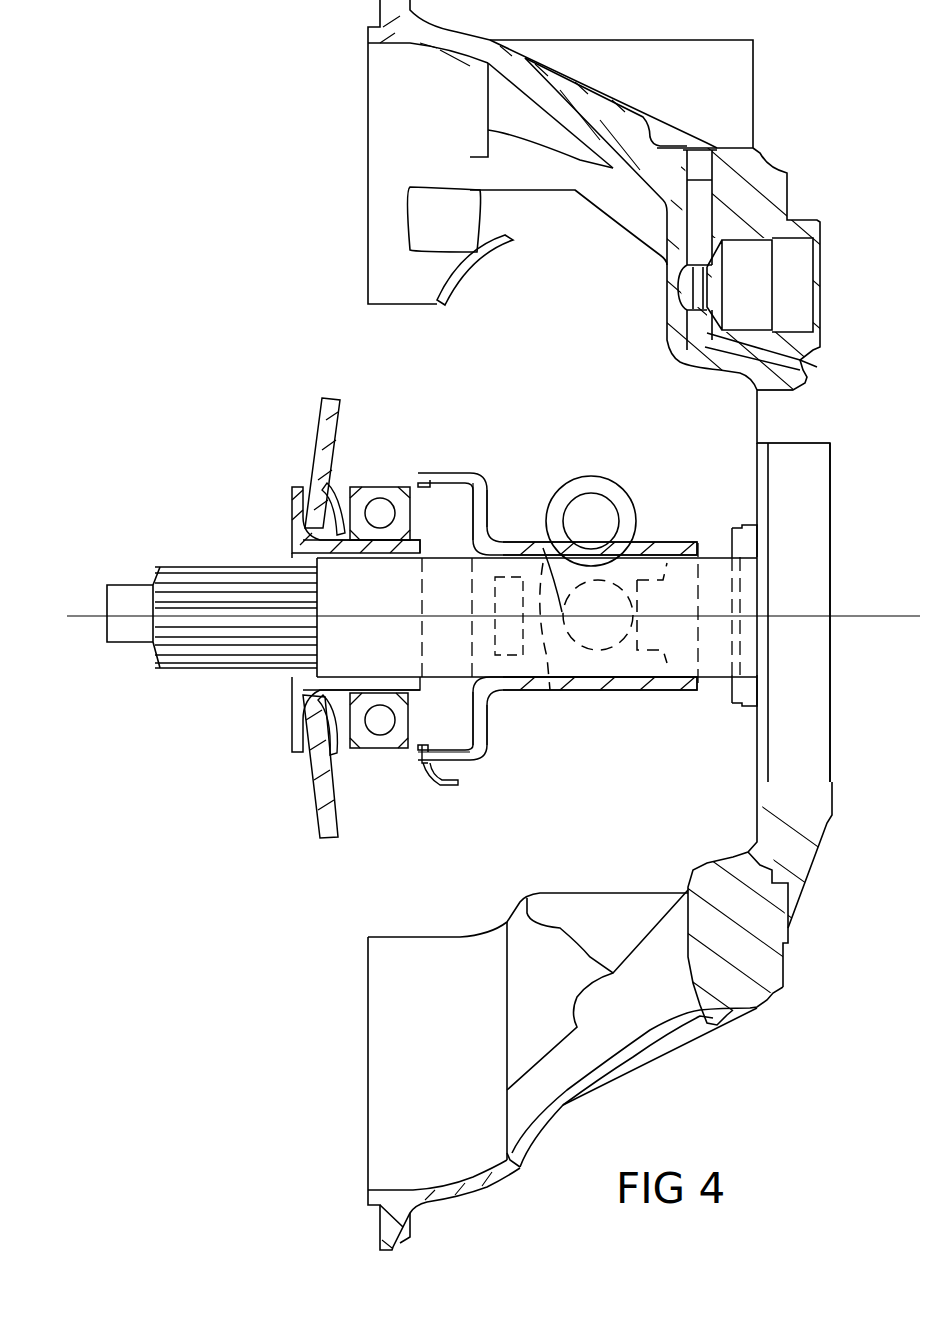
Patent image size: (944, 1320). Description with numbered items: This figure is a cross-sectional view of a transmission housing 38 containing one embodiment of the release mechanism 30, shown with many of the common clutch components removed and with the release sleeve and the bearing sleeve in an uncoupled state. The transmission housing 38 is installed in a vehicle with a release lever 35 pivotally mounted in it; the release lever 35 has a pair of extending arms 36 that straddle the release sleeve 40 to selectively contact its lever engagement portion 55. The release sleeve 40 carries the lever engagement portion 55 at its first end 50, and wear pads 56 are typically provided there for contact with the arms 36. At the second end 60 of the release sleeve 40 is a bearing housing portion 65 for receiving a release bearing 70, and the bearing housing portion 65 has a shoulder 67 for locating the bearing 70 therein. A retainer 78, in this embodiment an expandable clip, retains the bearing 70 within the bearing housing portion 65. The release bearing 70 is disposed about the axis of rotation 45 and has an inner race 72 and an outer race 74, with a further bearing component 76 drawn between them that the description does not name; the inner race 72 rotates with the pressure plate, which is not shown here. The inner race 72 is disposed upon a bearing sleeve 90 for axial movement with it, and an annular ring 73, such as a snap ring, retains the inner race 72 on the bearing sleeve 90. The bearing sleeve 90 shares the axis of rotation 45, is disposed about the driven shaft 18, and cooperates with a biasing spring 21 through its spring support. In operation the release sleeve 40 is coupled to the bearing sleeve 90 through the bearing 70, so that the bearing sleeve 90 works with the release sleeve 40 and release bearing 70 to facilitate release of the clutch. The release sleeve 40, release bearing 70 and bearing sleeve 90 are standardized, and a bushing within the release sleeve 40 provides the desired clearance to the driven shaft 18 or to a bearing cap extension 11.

The bearing cap extension 11 is at (332, 647).
The driven shaft 18 is at (117, 642).
The biasing spring 21 is at (323, 437).
The release mechanism 30 is at (320, 372).
The release lever 35 is at (622, 497).
The arms 36 is at (550, 690).
The transmission housing 38 is at (813, 417).
The release sleeve 40 is at (588, 715).
The axis of rotation 45 is at (82, 618).
The first end 50 is at (676, 722).
The lever engagement portion 55 is at (620, 693).
The wear pads 56 is at (612, 603).
The second end 60 is at (512, 440).
The bearing housing portion 65 is at (473, 752).
The shoulder 67 is at (427, 773).
The release bearing 70 is at (335, 778).
The inner race 72 is at (413, 540).
The annular ring 73 is at (420, 537).
The outer race 74 is at (372, 487).
The bearing ball 76 is at (383, 507).
The retainer 78 is at (440, 787).
The bearing sleeve 90 is at (270, 512).